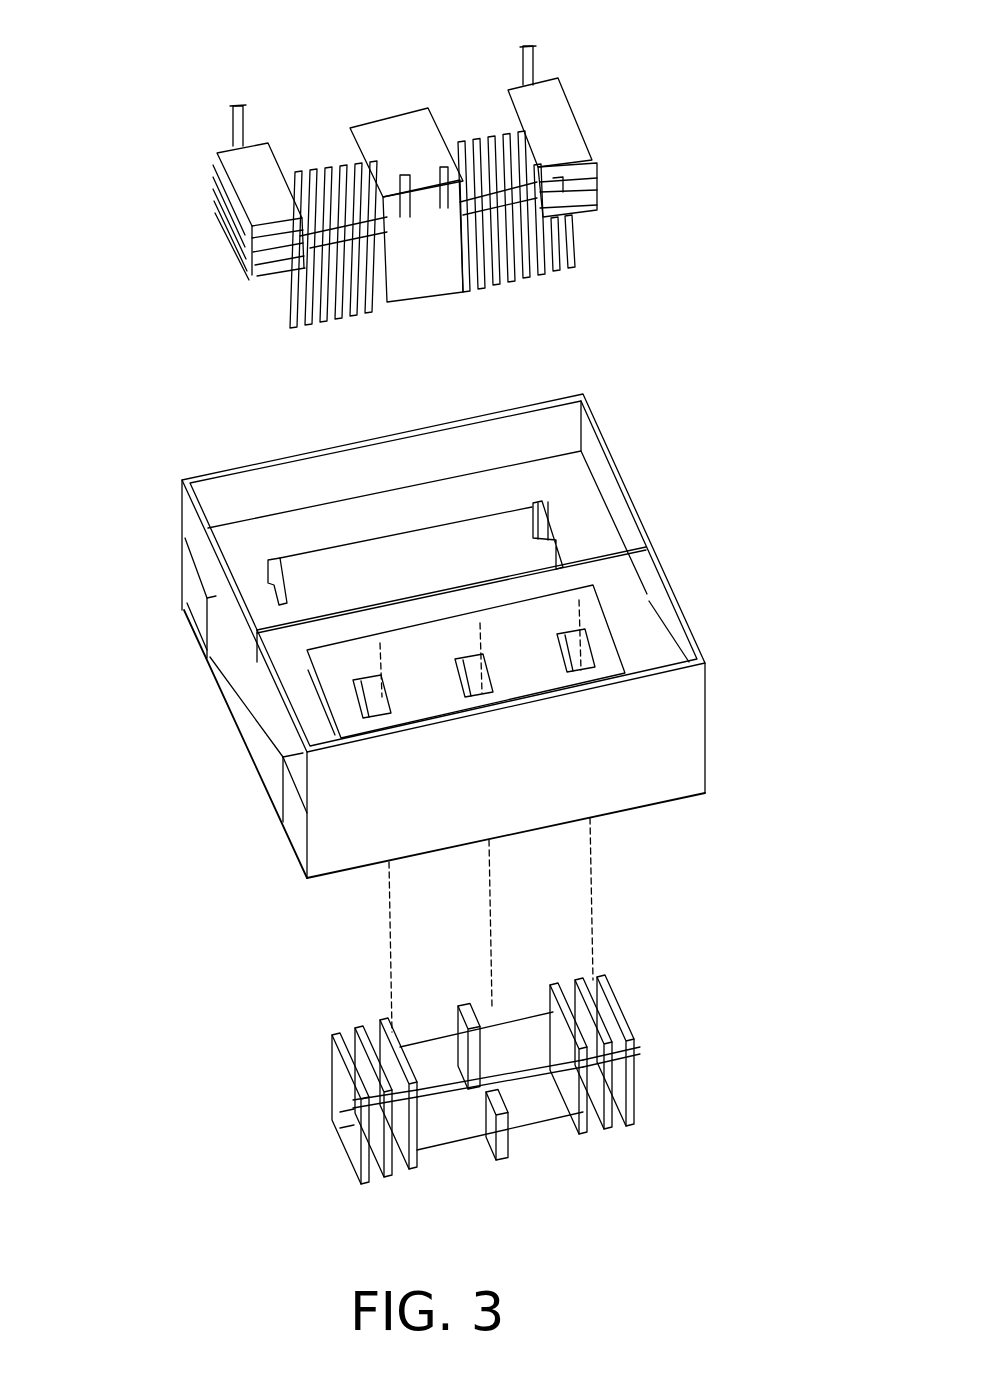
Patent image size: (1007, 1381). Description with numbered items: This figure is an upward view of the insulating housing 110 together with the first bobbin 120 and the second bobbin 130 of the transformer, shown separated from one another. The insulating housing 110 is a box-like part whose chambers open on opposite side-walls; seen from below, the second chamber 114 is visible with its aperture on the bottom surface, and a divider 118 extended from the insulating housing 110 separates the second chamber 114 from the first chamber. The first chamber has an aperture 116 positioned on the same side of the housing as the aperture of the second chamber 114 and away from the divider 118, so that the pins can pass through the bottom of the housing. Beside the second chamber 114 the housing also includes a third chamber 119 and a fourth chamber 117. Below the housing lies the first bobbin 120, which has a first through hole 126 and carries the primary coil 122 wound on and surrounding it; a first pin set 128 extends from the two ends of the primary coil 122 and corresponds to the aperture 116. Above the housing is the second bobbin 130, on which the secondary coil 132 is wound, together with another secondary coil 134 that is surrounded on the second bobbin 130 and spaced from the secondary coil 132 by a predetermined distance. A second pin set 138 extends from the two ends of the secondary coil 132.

The insulating housing 110 is at (432, 614).
The second chamber 114 is at (480, 540).
The aperture 116 is at (577, 665).
The fourth chamber 117 is at (296, 822).
The divider 118 is at (624, 578).
The third chamber 119 is at (197, 612).
The first bobbin 120 is at (498, 1091).
The primary coil 122 is at (585, 1150).
The first through hole 126 is at (352, 1124).
The first pin set 128 is at (395, 1032).
The second bobbin 130 is at (557, 108).
The secondary coil 132 is at (388, 323).
The secondary coil 134 is at (570, 287).
The second pin set 138 is at (233, 126).